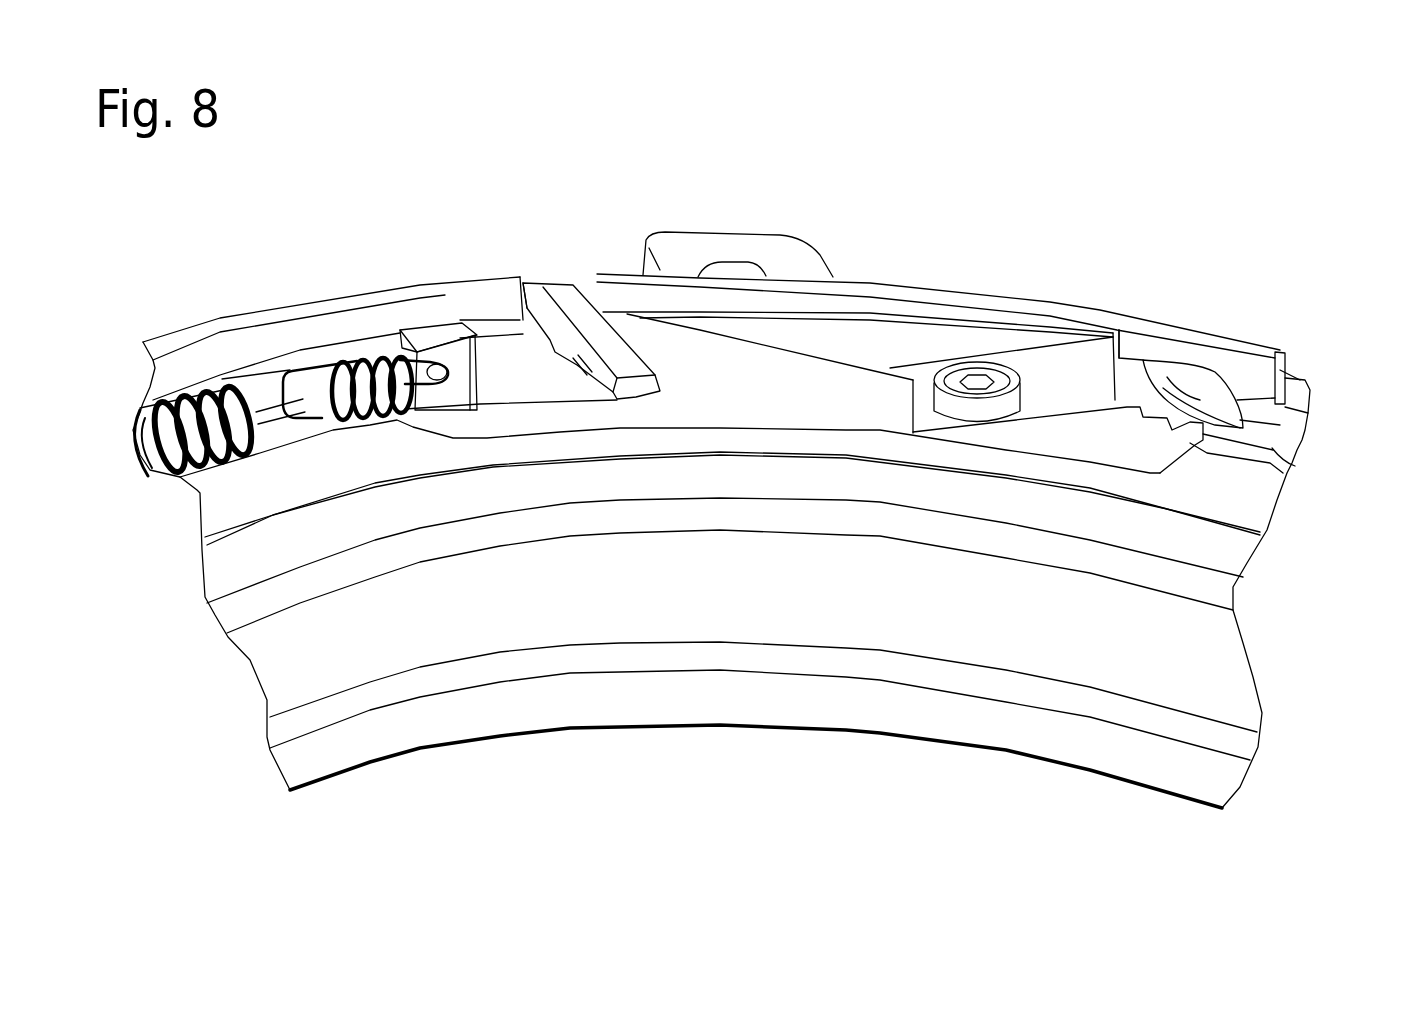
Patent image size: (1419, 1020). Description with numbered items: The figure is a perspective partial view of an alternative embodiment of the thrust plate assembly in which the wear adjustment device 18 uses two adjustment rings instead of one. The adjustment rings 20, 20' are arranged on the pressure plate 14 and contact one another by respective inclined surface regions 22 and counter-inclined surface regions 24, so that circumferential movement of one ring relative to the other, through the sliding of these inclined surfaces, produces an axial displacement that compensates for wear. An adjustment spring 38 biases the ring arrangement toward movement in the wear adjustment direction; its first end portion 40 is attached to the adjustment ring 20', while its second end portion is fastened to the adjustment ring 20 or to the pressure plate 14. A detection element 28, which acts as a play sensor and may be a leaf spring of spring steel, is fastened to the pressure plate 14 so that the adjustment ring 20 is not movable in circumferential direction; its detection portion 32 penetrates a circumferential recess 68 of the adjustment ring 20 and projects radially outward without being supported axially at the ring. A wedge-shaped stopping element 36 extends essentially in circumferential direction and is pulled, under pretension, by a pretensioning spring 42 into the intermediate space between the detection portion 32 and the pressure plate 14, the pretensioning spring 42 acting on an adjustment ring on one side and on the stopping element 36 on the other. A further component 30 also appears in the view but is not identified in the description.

The pressure plate 14 is at (1193, 660).
The wear adjustment device 18 is at (946, 253).
The adjustment ring 20 is at (1214, 329).
The adjustment ring 20' is at (1341, 420).
The inclined surface regions 22 is at (1197, 373).
The counter-inclined surface regions 24 is at (1125, 357).
The detection element 28 is at (760, 380).
The clamping block with screw 30 is at (1085, 437).
The detection portion 32 is at (570, 297).
The stopping element 36 is at (496, 365).
The adjustment spring 38 is at (214, 400).
The first end portion 40 is at (268, 408).
The pretensioning spring 42 is at (338, 440).
The circumferential recess 68 is at (587, 300).